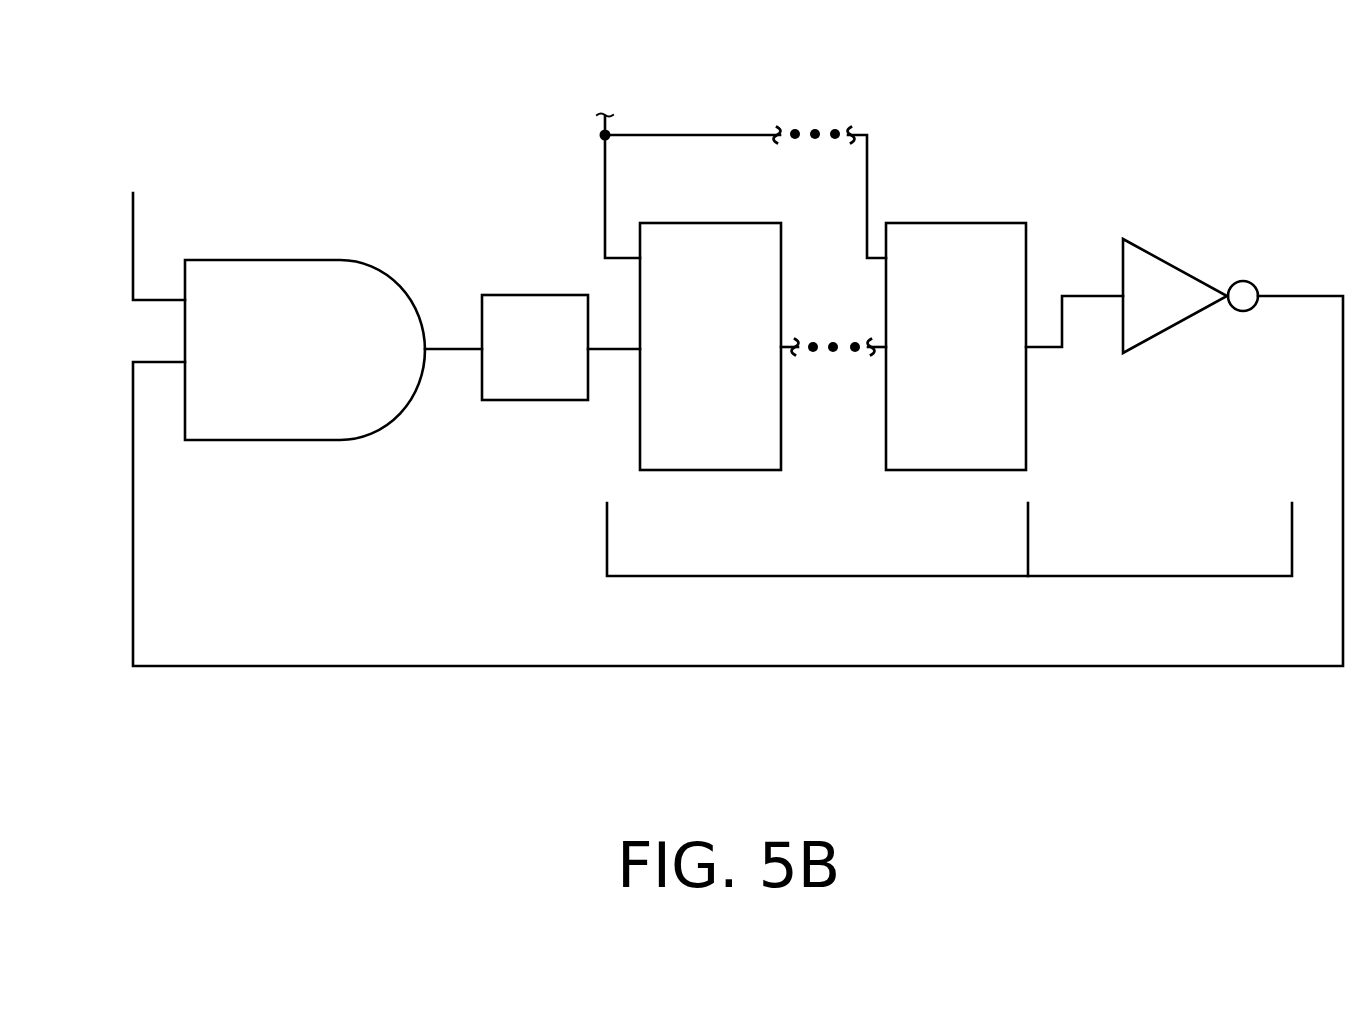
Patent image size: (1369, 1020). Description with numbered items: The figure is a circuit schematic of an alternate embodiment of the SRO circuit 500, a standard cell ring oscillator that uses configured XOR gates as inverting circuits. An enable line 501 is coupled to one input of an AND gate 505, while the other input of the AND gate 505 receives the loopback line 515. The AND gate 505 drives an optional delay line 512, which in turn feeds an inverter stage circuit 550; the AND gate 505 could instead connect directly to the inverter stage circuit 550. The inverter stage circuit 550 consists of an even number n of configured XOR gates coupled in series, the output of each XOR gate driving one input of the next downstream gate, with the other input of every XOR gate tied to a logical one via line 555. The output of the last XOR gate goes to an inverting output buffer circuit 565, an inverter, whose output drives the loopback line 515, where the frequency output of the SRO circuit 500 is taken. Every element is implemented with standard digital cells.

The SRO circuit 500 is at (193, 72).
The enable line 501 is at (134, 222).
The AND gate 505 is at (333, 350).
The delay line 512 is at (561, 347).
The loopback line 515 is at (777, 667).
The inverter stage circuit 550 is at (908, 577).
The line 555 is at (604, 180).
The inverting output buffer circuit 565 is at (1190, 296).